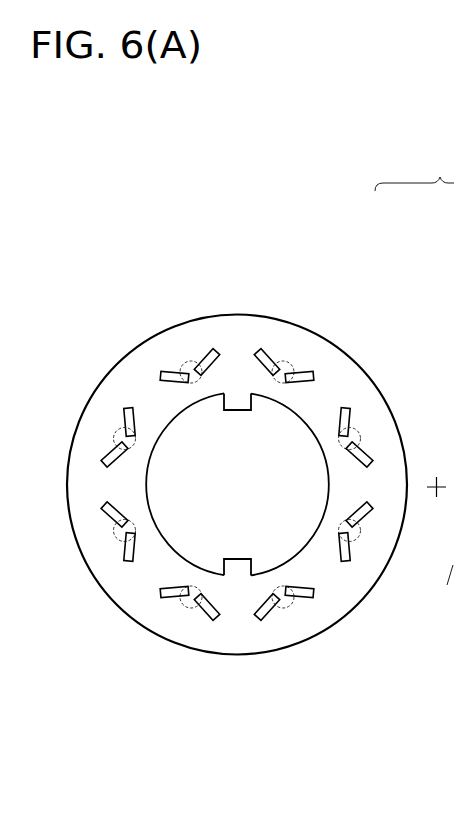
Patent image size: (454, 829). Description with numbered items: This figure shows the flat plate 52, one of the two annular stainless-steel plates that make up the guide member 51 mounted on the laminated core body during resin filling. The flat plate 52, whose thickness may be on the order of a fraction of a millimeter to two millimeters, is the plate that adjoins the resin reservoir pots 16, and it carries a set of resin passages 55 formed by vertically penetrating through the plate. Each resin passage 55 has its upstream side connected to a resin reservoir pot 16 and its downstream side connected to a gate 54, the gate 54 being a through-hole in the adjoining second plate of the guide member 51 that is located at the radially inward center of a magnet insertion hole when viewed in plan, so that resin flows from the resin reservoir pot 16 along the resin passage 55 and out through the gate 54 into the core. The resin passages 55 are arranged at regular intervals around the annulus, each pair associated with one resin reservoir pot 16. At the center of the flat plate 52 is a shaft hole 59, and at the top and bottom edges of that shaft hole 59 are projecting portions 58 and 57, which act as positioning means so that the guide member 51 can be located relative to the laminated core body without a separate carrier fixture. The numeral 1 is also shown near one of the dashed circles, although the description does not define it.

The guide member 51 is at (414, 166).
The flat plate 52 is at (342, 350).
The resin reservoir pot 16 is at (283, 363).
The resin passage 55 is at (267, 357).
The pin 1 is at (356, 428).
The projecting portion 58 is at (227, 402).
The projecting portion 57 is at (236, 566).
The shaft hole 59 is at (327, 505).
The gate 54 is at (441, 593).